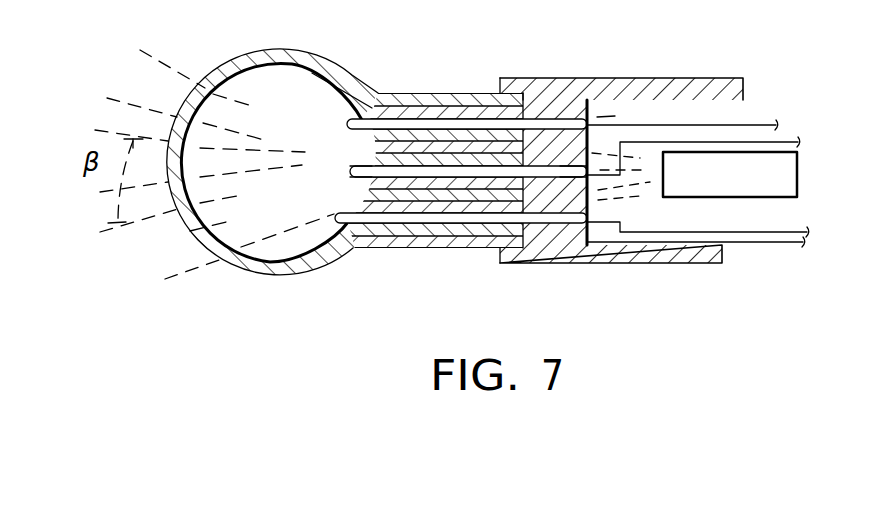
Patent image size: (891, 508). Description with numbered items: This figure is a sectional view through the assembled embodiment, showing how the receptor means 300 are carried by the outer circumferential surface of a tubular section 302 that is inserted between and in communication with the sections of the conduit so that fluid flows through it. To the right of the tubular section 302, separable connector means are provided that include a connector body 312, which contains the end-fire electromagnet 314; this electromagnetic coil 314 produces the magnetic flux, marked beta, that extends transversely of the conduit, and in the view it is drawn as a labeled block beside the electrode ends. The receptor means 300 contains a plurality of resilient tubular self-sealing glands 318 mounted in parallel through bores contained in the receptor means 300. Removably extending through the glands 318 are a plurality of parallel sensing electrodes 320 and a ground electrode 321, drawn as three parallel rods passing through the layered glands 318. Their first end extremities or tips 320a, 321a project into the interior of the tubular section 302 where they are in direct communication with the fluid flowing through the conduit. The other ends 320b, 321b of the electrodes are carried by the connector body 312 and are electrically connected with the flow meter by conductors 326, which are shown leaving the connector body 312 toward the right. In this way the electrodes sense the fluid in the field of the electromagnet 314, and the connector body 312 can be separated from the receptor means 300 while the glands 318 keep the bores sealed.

The receptor means 300 is at (435, 157).
The tubular section 302 is at (211, 74).
The connector body 312 is at (696, 80).
The end-fire electromagnet 314 is at (797, 165).
The resilient tubular self-sealing glands 318 is at (407, 103).
The sensing electrodes 320 is at (501, 94).
The first end extremities or tips of sensing electrodes 320a is at (302, 112).
The other ends of sensing electrodes 320b is at (570, 100).
The ground electrode 321 is at (480, 178).
The first end extremity or tip of ground electrode 321a is at (352, 172).
The other end of ground electrode 321b is at (570, 178).
The conductors 326 is at (774, 121).